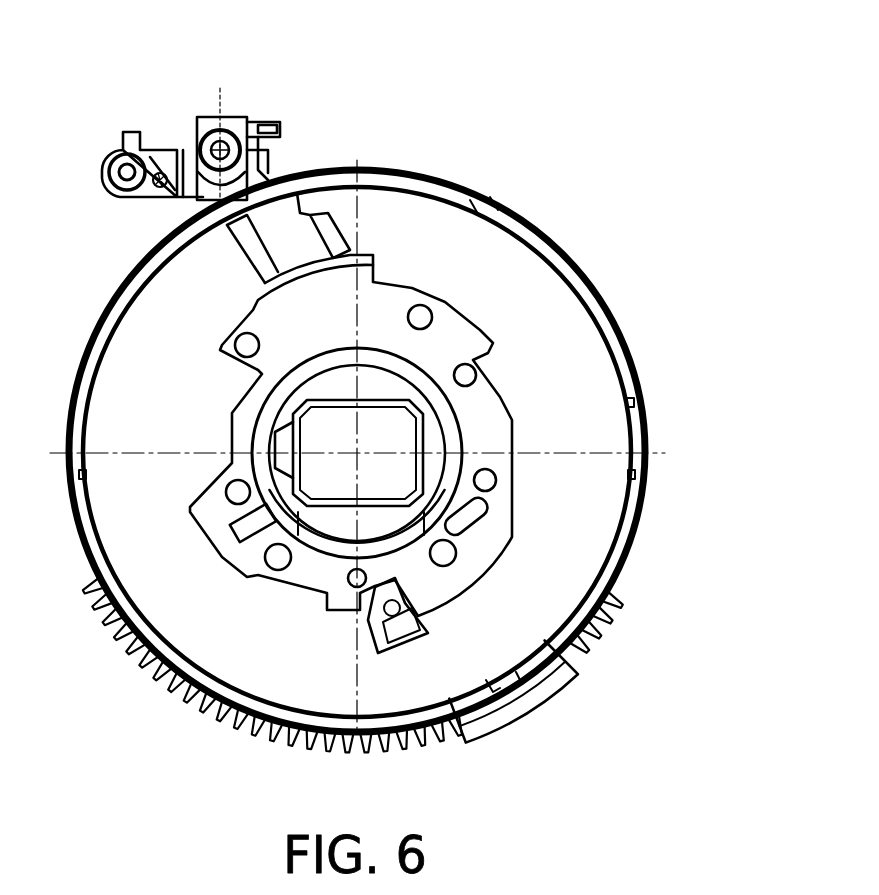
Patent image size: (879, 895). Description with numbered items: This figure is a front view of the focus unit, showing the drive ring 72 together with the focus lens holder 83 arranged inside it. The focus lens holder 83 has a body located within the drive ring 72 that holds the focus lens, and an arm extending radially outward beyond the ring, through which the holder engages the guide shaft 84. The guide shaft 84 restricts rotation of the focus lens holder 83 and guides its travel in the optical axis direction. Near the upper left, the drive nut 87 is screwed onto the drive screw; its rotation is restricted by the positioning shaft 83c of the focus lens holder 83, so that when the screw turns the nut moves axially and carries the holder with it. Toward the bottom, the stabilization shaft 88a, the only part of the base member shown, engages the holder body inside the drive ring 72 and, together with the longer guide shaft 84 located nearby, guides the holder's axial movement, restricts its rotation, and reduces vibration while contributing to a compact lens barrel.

The drive ring 72 is at (572, 258).
The focus lens holder 83 is at (330, 332).
The positioning shaft 83c is at (165, 172).
The guide shaft 84 is at (247, 120).
The drive nut 87 is at (110, 138).
The stabilization shaft 88a is at (390, 610).